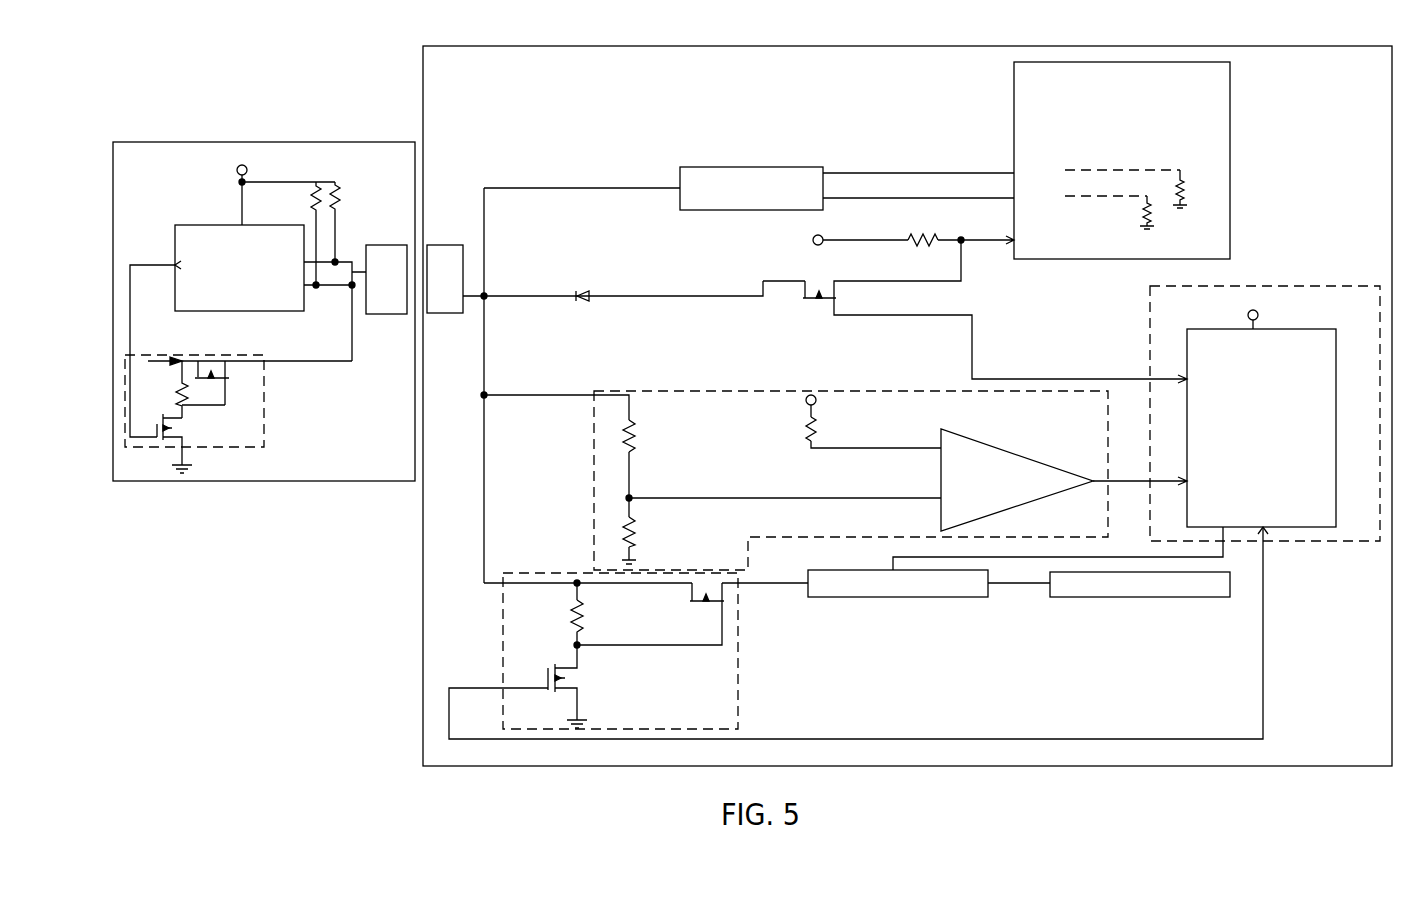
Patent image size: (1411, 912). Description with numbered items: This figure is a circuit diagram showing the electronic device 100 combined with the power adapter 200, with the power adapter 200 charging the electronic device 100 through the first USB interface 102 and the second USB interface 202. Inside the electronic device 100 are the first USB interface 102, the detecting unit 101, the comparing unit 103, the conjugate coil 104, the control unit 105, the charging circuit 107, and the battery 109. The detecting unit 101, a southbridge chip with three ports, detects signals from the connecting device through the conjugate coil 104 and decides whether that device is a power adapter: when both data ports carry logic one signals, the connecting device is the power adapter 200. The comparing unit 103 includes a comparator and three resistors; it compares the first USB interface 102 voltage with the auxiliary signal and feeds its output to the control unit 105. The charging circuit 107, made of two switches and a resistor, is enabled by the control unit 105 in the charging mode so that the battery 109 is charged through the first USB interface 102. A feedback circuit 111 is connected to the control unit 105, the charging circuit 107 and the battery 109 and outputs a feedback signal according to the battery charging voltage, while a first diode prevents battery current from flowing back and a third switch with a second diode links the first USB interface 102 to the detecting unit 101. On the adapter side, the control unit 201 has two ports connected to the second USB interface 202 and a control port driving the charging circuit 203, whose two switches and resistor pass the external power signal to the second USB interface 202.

The electronic device 100 is at (597, 46).
The detecting unit 101 is at (1014, 104).
The first USB interface 102 is at (433, 245).
The comparing unit 103 is at (697, 391).
The conjugate coil 104 is at (702, 167).
The control unit 105 is at (1150, 318).
The charging circuit 107 is at (738, 672).
The battery 109 is at (1143, 597).
The feedback circuit 111 is at (884, 597).
The power adapter 200 is at (293, 143).
The control unit 201 is at (175, 245).
The second USB interface 202 is at (404, 245).
The charging circuit 203 is at (264, 378).